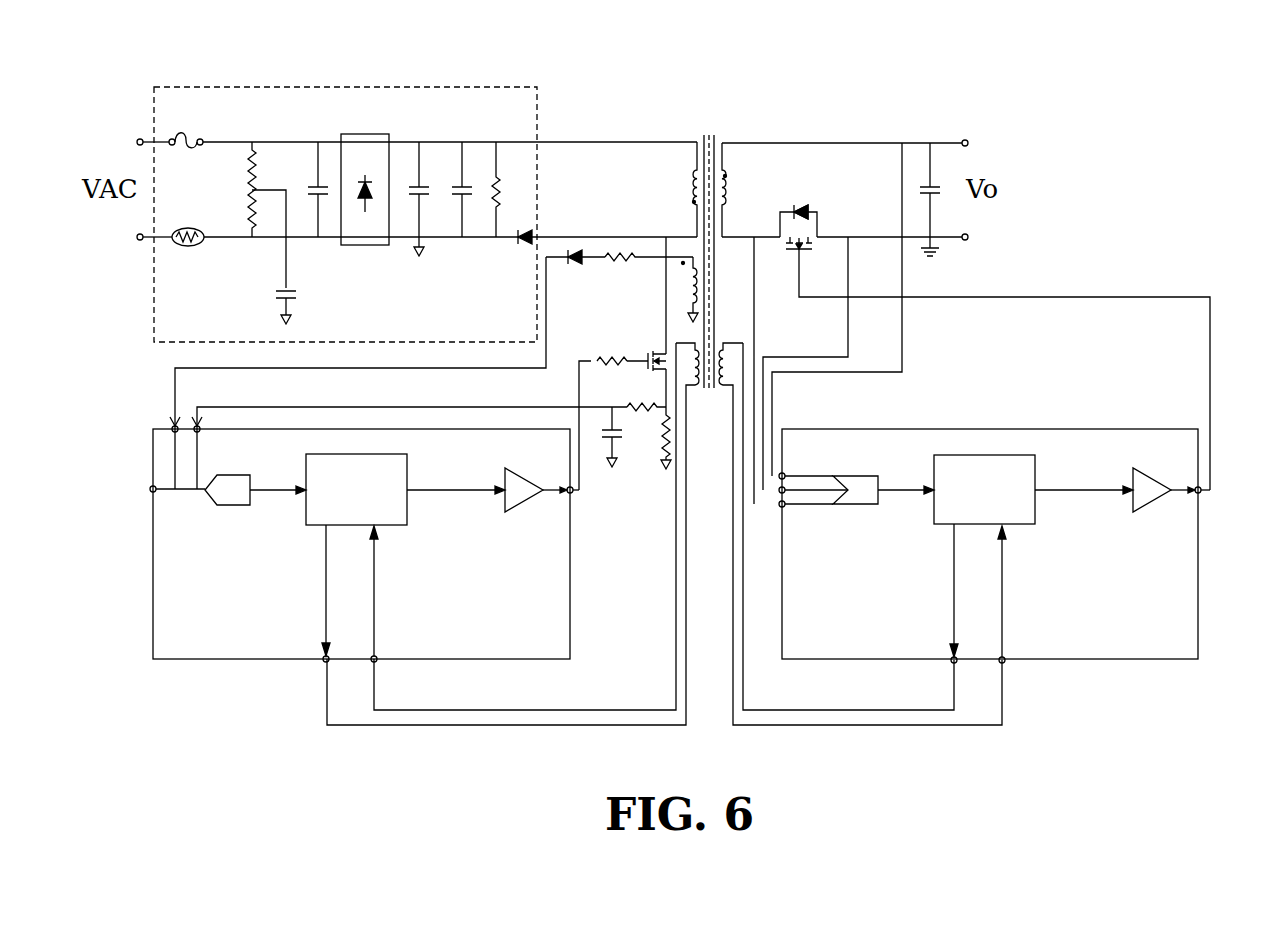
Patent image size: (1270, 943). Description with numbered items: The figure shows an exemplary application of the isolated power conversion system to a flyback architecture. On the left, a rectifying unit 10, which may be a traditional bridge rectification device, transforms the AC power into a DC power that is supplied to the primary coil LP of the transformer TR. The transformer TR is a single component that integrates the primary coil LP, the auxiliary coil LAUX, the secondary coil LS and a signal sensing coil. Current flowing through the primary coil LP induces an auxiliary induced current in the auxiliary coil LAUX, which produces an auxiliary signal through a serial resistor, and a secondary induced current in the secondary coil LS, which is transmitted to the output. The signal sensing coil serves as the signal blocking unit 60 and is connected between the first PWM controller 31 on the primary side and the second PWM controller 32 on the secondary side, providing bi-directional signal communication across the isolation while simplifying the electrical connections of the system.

The rectifying unit 10 is at (346, 87).
The transformer TR is at (707, 213).
The primary coil LP is at (690, 187).
The secondary coil LS is at (755, 190).
The auxiliary coil LAUX is at (688, 290).
The signal blocking unit 60 is at (734, 368).
The first PWM controller 31 is at (153, 575).
The second PWM controller 32 is at (1198, 575).